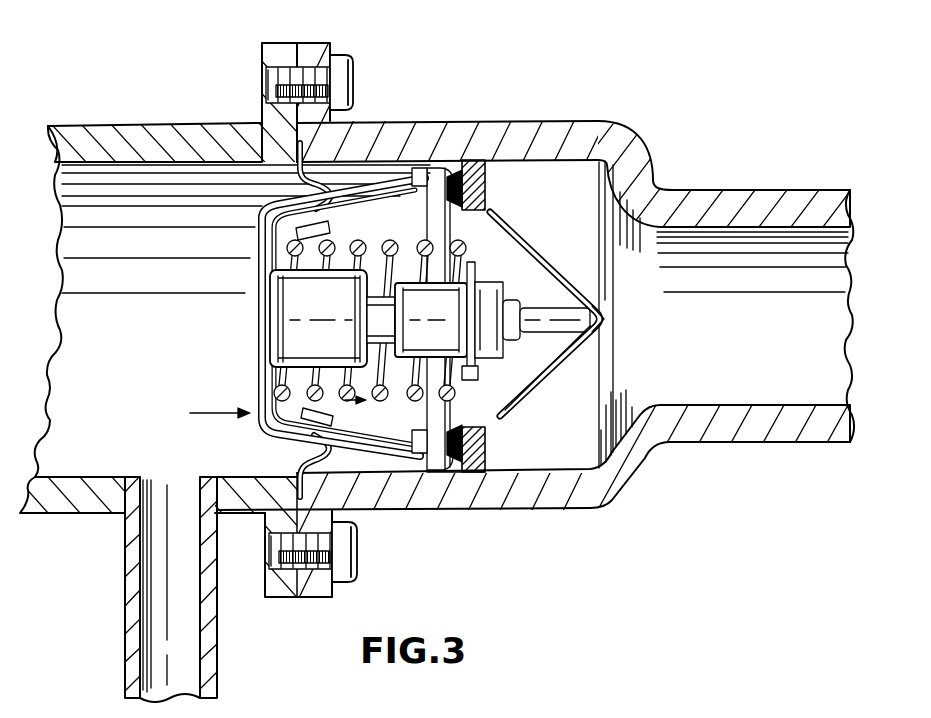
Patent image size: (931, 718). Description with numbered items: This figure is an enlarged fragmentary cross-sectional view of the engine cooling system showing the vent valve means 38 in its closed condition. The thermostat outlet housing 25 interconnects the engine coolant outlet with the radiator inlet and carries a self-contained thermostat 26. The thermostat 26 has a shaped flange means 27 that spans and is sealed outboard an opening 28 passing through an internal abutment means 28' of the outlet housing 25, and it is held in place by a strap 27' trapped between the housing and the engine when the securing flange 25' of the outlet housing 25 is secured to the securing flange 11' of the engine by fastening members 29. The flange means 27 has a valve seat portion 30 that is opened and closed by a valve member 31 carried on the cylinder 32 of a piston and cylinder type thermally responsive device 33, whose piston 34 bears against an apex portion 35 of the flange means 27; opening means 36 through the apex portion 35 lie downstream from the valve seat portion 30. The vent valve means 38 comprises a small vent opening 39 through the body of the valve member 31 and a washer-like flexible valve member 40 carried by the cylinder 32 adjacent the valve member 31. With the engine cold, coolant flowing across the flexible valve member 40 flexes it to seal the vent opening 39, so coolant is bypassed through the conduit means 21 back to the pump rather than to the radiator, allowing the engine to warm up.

The securing flange 11' is at (215, 313).
The securing flange 25' is at (330, 298).
The thermostat outlet housing 25 is at (747, 276).
The thermostat 26 is at (529, 220).
The fastening members 29 is at (353, 72).
The conduit means 21 is at (125, 592).
The strap 27' is at (363, 290).
The shaped flange means 27 is at (545, 314).
The internal abutment means 28' is at (507, 277).
The opening 28 is at (491, 316).
The valve seat portion 30 is at (421, 473).
The valve member 31 is at (433, 383).
The cylinder 32 is at (408, 242).
The thermally responsive device 33 is at (250, 330).
The piston 34 is at (545, 308).
The apex portion 35 is at (604, 316).
The opening means 36 is at (538, 345).
The vent valve means 38 is at (452, 358).
The vent opening 39 is at (470, 373).
The flexible valve member 40 is at (478, 290).